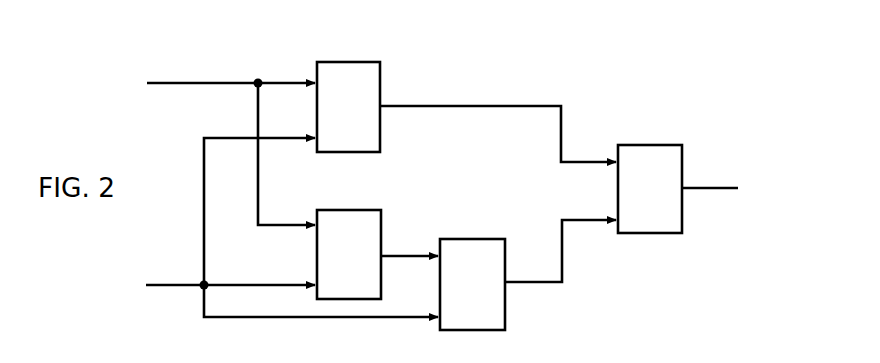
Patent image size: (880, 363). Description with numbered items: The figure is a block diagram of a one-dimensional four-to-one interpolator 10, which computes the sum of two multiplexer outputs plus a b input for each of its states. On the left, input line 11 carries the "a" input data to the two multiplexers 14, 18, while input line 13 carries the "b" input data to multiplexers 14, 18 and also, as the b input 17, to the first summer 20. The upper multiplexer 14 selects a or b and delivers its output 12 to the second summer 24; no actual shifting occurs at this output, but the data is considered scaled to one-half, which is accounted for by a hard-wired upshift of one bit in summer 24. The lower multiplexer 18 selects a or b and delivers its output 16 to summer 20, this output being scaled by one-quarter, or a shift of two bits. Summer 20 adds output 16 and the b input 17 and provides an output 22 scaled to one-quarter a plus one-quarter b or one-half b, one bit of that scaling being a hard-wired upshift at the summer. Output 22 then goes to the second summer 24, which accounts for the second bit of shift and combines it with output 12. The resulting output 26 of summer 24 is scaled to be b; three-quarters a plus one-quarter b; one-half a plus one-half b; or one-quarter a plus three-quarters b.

The one-dimensional four-to-one interpolator 10 is at (510, 91).
The input line 11 is at (172, 80).
The multiplexer output 12 is at (465, 103).
The input line 13 is at (237, 283).
The multiplexer 14 is at (383, 73).
The multiplexer output 16 is at (403, 252).
The b input 17 is at (203, 250).
The multiplexer 18 is at (351, 210).
The summer 20 is at (483, 239).
The summer output 22 is at (565, 271).
The summer 24 is at (660, 235).
The output 26 is at (725, 187).